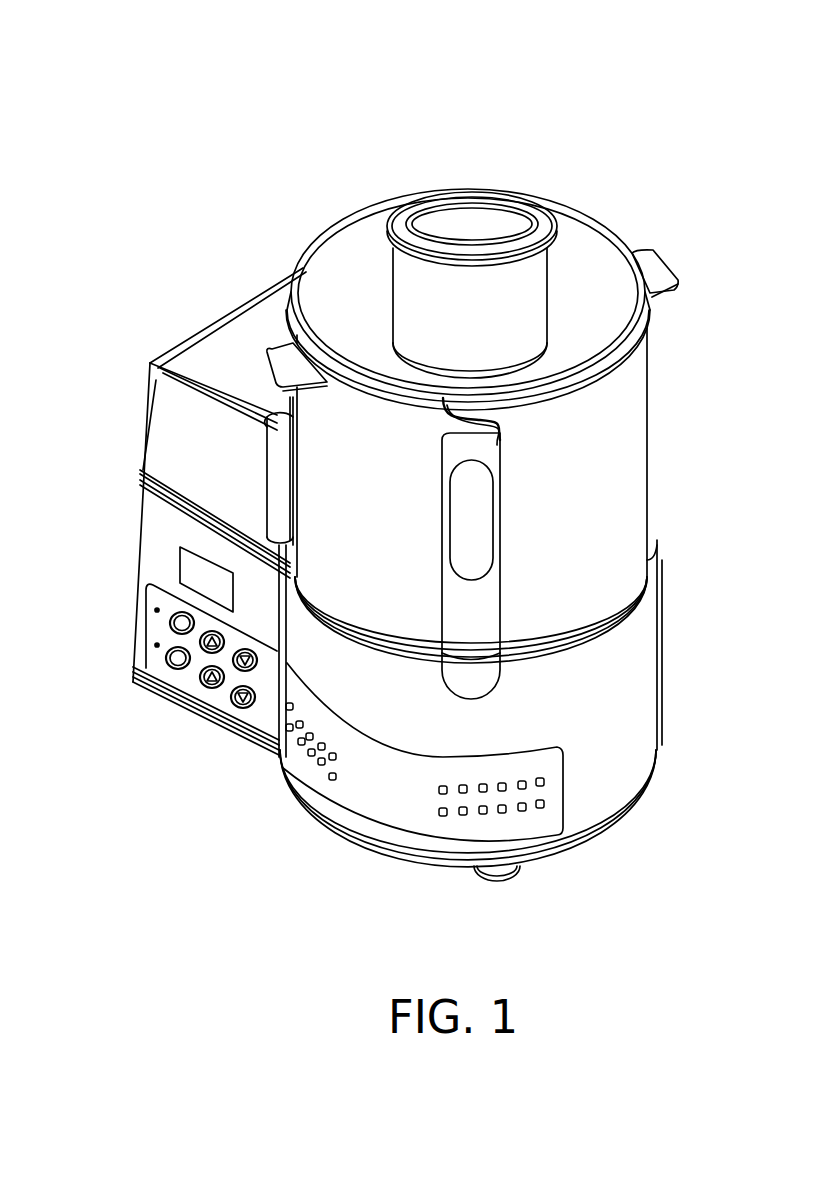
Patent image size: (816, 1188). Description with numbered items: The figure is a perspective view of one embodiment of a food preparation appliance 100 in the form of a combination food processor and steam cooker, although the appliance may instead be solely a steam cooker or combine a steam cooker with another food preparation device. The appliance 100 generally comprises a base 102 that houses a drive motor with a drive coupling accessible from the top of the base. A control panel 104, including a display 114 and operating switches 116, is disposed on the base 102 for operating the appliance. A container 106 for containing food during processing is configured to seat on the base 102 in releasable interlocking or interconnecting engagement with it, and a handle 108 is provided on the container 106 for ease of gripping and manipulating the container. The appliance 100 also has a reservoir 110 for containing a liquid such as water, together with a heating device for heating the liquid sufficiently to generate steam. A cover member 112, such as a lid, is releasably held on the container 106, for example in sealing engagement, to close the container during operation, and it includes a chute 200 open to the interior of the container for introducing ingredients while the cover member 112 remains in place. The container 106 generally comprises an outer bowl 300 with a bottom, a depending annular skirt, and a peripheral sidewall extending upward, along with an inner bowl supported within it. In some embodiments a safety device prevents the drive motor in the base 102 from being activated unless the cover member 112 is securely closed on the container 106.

The food preparation appliance 100 is at (508, 122).
The base 102 is at (620, 687).
The control panel 104 is at (153, 628).
The container 106 is at (623, 393).
The handle 108 is at (485, 608).
The reservoir 110 is at (167, 416).
The cover member 112 is at (573, 240).
The display 114 is at (187, 565).
The operating switches 116 is at (203, 675).
The chute 200 is at (412, 275).
The outer bowl 300 is at (612, 448).